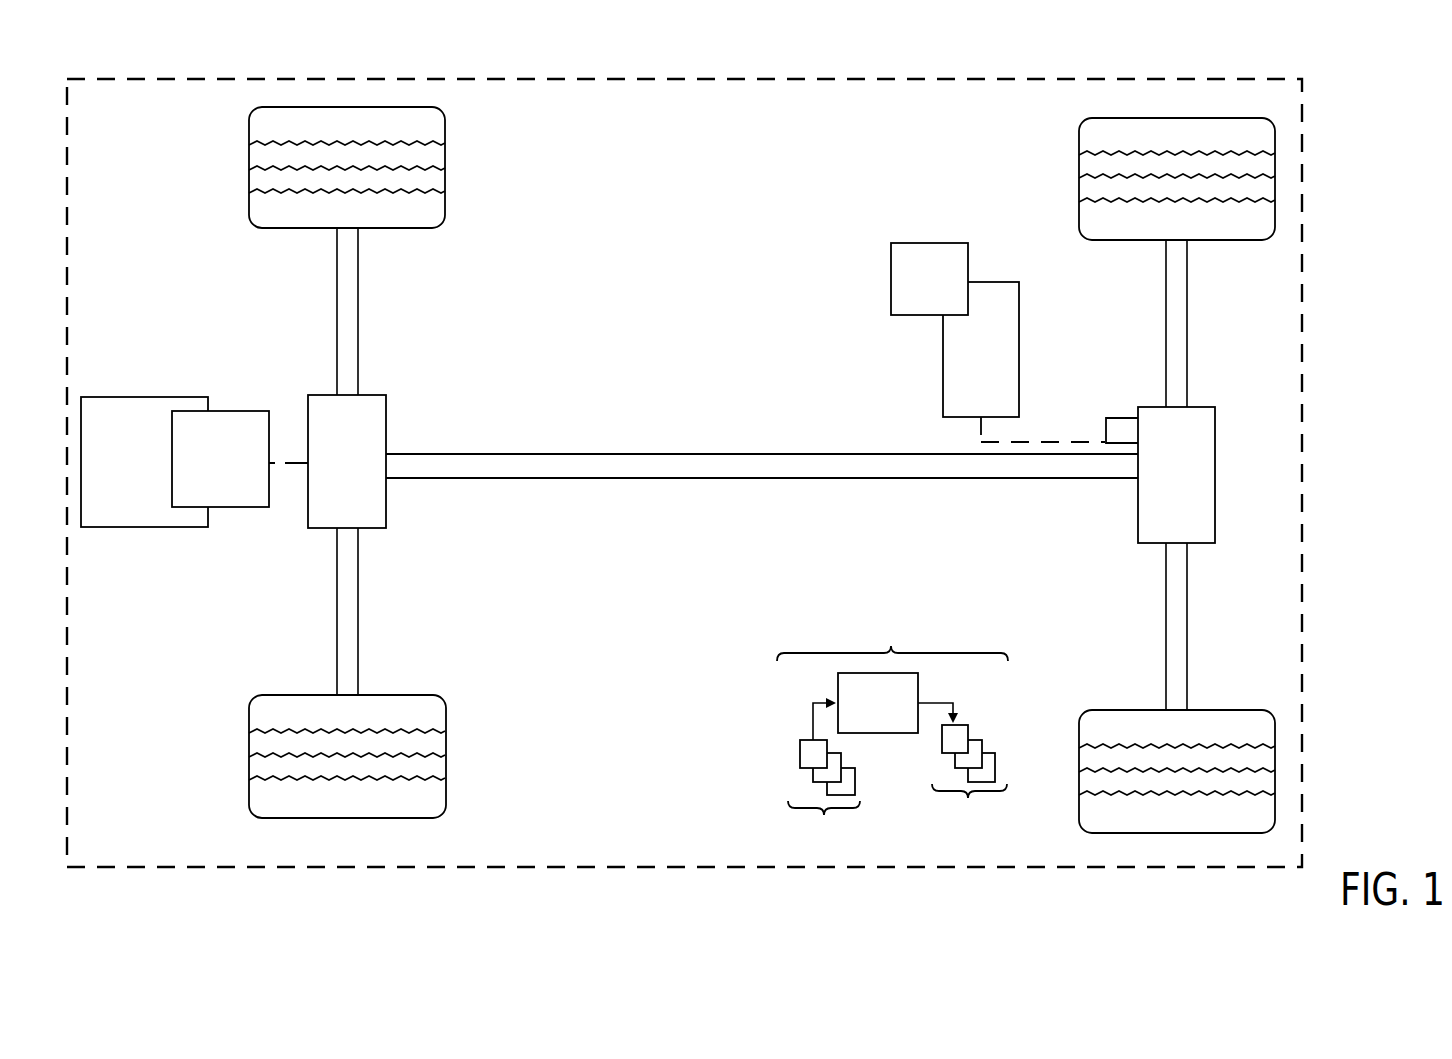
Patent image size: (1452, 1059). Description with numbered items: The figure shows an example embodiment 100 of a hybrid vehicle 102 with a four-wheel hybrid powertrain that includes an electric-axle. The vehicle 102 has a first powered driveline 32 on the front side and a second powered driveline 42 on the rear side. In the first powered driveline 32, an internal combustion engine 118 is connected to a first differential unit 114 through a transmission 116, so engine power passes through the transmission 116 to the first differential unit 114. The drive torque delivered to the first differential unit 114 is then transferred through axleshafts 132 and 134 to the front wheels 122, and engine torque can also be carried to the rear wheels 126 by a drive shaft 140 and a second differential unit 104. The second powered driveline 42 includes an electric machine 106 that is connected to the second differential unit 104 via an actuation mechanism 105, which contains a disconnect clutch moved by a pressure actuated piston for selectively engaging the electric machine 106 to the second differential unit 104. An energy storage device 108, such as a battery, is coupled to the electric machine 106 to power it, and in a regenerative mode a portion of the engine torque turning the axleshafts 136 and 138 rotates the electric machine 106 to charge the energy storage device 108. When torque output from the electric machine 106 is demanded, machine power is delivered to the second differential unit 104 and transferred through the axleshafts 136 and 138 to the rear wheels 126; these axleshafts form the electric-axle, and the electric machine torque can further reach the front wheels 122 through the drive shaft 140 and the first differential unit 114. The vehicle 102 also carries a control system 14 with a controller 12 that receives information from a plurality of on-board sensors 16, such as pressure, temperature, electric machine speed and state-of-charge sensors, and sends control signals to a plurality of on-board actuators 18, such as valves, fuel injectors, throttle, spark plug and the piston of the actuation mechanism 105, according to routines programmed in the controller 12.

The example embodiment 100 is at (1228, 54).
The hybrid vehicle 102 is at (653, 79).
The second differential unit 104 is at (1160, 490).
The actuation mechanism 105 is at (1117, 418).
The electric machine 106 is at (964, 363).
The energy storage device 108 is at (913, 290).
The first differential unit 114 is at (330, 475).
The transmission 116 is at (204, 471).
The internal combustion engine 118 is at (128, 475).
The front wheels 122 is at (407, 230).
The rear wheels 126 is at (1132, 242).
The axleshaft 132 is at (358, 599).
The axleshaft 134 is at (340, 307).
The axleshaft 136 is at (1187, 625).
The axleshaft 138 is at (1166, 305).
The drive shaft 140 is at (797, 453).
The first powered driveline 32 is at (414, 343).
The second powered driveline 42 is at (1225, 343).
The controller 12 is at (866, 715).
The control system 14 is at (895, 707).
The sensors 16 is at (825, 781).
The actuators 18 is at (965, 774).